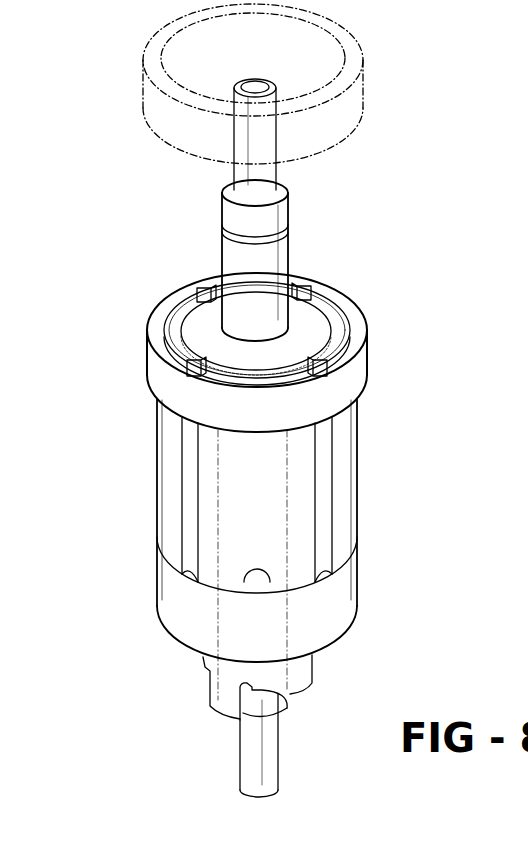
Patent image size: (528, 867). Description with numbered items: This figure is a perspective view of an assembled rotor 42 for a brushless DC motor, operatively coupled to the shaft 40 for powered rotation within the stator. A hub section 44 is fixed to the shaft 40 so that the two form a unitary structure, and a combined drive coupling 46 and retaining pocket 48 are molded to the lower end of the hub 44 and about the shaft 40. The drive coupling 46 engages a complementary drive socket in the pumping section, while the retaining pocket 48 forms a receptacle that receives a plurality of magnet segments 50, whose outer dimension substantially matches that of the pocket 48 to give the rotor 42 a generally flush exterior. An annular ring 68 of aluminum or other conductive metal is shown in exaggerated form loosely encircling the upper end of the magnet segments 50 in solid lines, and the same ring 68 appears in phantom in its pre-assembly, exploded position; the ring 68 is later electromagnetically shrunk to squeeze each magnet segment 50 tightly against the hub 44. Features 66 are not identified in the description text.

The shaft 40 is at (280, 258).
The rotor 42 is at (358, 522).
The hub section 44 is at (198, 324).
The drive coupling 46 is at (215, 699).
The retaining pocket 48 is at (254, 583).
The magnet segments 50 is at (268, 501).
The slots 66 is at (188, 576).
The annular ring 68 is at (352, 100).